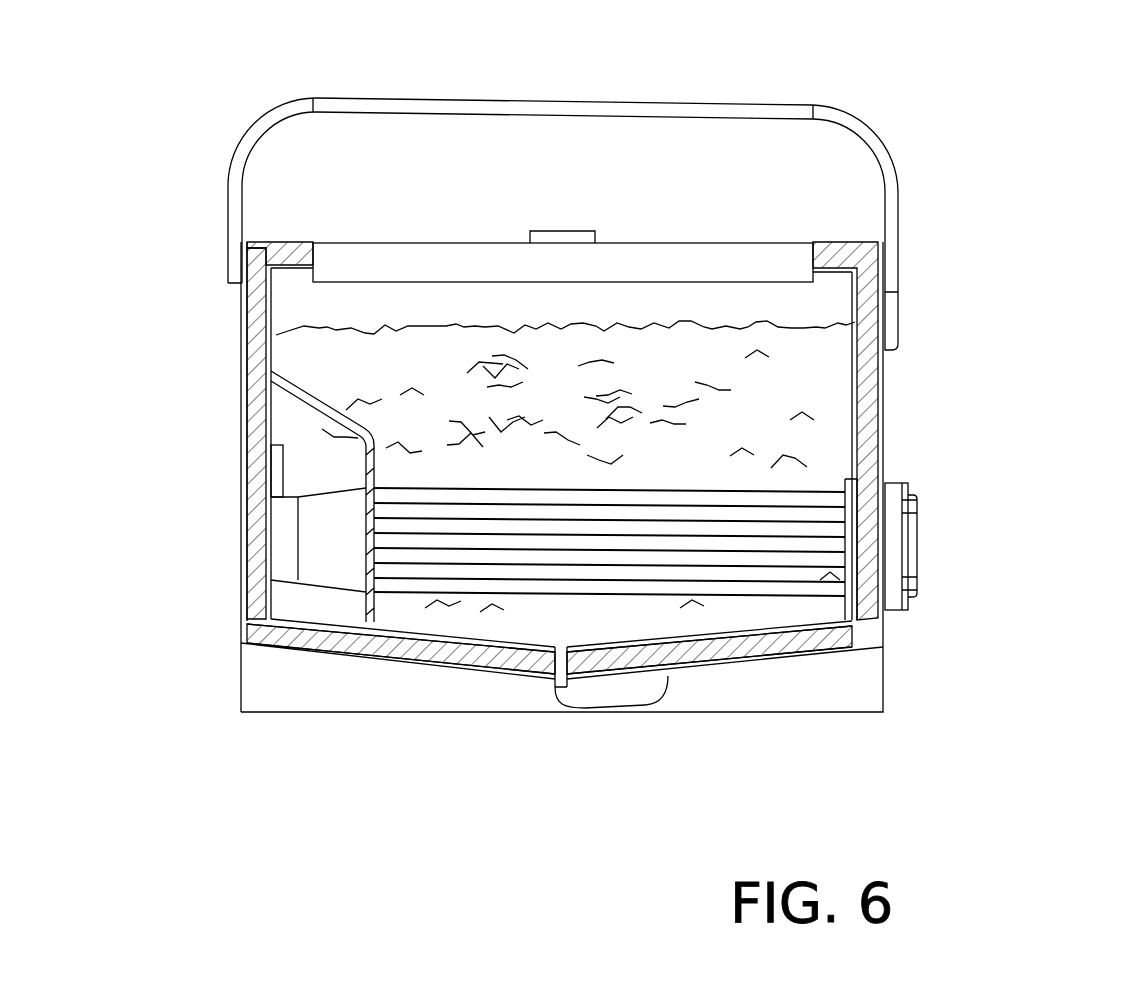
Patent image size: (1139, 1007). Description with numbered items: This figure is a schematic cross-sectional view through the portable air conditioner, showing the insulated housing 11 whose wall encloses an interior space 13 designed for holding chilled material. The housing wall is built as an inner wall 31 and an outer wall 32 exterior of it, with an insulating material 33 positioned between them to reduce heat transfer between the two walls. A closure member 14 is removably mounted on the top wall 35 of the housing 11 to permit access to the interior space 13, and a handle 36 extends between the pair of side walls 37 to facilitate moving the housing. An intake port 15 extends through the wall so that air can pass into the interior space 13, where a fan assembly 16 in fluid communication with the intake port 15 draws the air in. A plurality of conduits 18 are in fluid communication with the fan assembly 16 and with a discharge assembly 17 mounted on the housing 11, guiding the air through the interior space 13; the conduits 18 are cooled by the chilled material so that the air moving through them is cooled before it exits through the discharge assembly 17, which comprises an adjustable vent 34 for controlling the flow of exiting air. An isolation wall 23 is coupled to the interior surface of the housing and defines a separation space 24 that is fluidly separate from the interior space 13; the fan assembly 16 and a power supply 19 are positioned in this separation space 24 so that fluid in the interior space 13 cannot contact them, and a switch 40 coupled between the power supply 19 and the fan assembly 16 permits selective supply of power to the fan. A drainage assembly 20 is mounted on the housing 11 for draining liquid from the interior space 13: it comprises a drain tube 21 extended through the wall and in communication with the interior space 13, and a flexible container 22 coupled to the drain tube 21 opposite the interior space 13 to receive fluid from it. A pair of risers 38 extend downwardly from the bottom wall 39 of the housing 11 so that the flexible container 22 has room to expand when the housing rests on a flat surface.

The housing 11 is at (883, 713).
The interior space 13 is at (812, 303).
The closure member 14 is at (418, 252).
The intake port 15 is at (241, 541).
The fan assembly 16 is at (308, 610).
The discharge assembly 17 is at (948, 526).
The conduits 18 is at (787, 575).
The power supply 19 is at (278, 468).
The drainage assembly 20 is at (550, 740).
The drain tube 21 is at (560, 674).
The flexible container 22 is at (608, 690).
The isolation wall 23 is at (292, 388).
The separation space 24 is at (286, 598).
The inner wall 31 is at (313, 605).
The outer wall 32 is at (370, 658).
The insulating material 33 is at (333, 626).
The adjustable vent 34 is at (894, 548).
The top wall 35 is at (277, 242).
The handle 36 is at (767, 103).
The side walls 37 is at (246, 376).
The risers 38 is at (247, 703).
The bottom wall 39 is at (722, 666).
The switch 40 is at (244, 457).